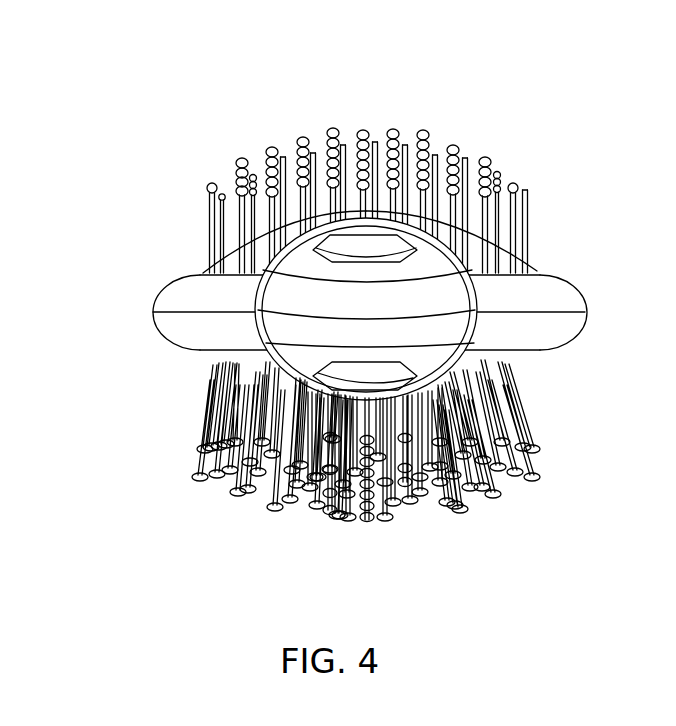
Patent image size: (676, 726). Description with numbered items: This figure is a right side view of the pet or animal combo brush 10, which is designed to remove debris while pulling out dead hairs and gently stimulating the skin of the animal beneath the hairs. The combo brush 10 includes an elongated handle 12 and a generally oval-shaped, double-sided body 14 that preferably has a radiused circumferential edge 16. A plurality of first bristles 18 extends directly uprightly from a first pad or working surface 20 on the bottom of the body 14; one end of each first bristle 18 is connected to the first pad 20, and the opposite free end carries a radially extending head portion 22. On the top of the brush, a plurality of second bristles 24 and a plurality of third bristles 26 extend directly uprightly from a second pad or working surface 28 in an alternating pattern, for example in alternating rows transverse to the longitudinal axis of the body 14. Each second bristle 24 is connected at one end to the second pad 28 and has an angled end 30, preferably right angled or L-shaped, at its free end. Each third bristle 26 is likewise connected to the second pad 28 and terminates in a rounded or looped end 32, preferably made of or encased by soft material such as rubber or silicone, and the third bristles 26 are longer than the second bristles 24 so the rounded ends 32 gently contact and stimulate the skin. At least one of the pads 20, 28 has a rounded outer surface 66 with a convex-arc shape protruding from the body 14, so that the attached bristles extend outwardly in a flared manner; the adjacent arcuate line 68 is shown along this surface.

The combo brush 10 is at (185, 76).
The elongated handle 12 is at (457, 302).
The body 14 is at (163, 288).
The radiused circumferential edge 16 is at (162, 333).
The first bristles 18 is at (530, 428).
The first pad 20 is at (205, 355).
The head portion 22 is at (343, 512).
The second bristles 24 is at (377, 142).
The third bristles 26 is at (332, 128).
The second pad 28 is at (529, 271).
The angled end 30 is at (206, 188).
The rounded or looped end 32 is at (222, 193).
The rounded outer surface 66 is at (207, 270).
The arcuate edge 68 is at (498, 252).